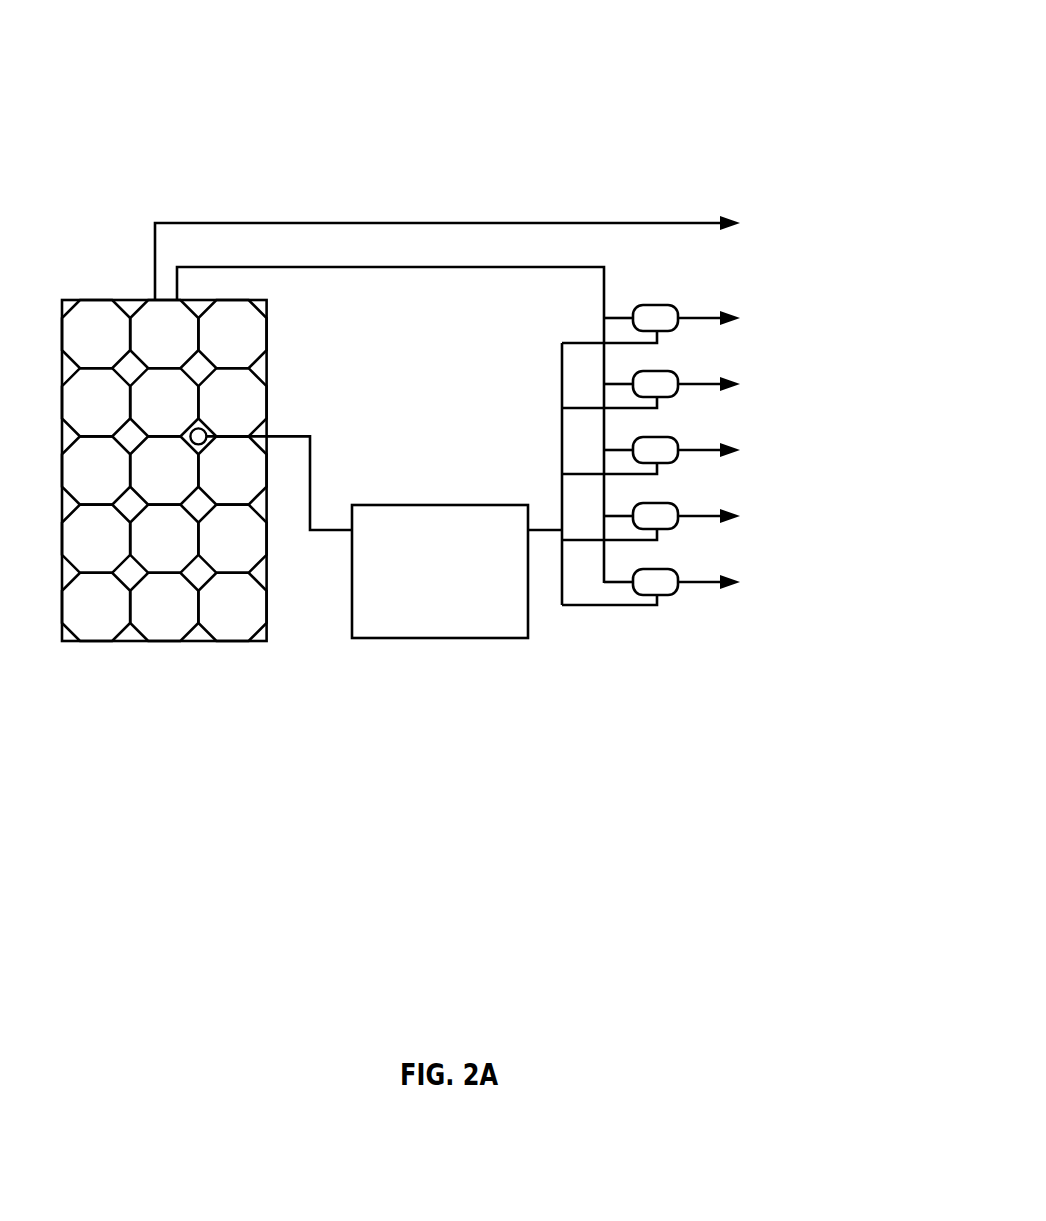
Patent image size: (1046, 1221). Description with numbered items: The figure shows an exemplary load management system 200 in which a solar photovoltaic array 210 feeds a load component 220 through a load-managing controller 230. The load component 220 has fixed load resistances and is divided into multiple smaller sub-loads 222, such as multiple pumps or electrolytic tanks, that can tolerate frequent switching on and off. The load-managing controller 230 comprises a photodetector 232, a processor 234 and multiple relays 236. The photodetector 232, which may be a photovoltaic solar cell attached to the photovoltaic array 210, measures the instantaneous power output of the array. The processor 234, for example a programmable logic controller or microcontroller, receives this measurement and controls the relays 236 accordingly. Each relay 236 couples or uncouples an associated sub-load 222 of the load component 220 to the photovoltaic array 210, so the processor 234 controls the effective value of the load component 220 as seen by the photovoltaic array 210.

The load management system 200 is at (438, 72).
The photovoltaic array 210 is at (130, 632).
The load component 220 is at (782, 261).
The sub-loads 222 is at (782, 290).
The load-managing controller 230 is at (492, 531).
The photodetector 232 is at (204, 430).
The processor 234 is at (440, 571).
The relays 236 is at (651, 488).